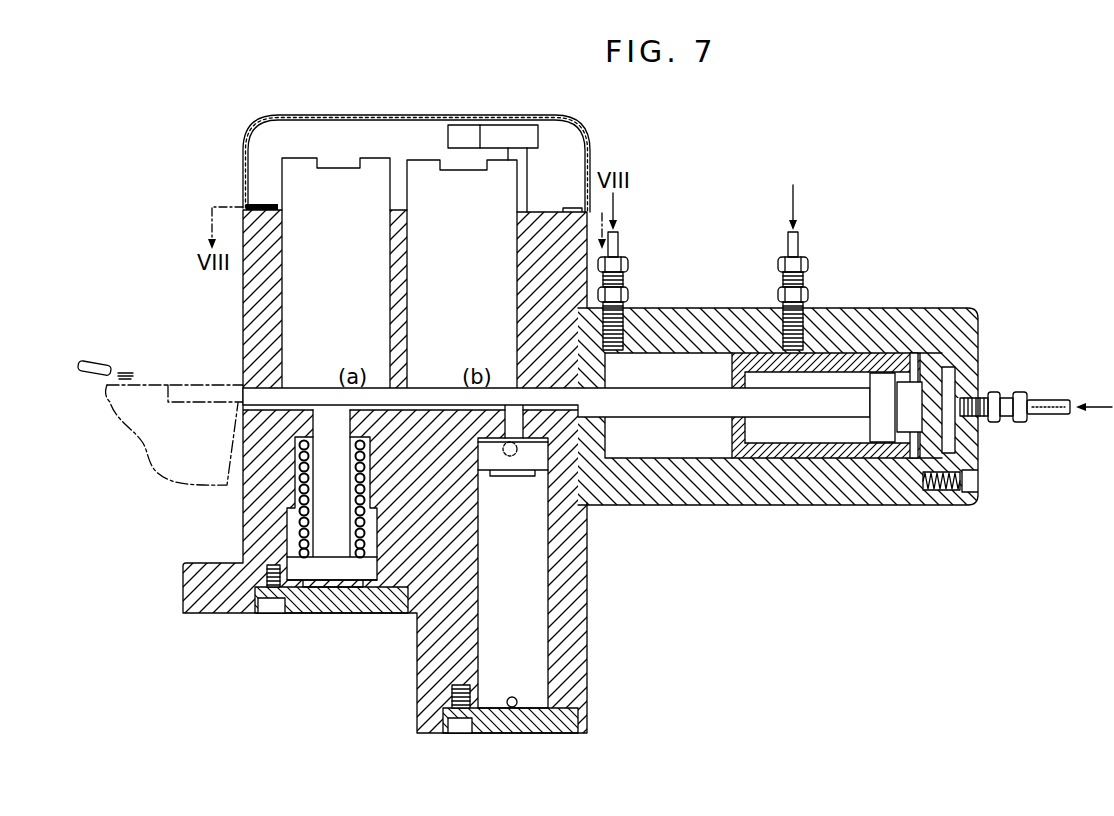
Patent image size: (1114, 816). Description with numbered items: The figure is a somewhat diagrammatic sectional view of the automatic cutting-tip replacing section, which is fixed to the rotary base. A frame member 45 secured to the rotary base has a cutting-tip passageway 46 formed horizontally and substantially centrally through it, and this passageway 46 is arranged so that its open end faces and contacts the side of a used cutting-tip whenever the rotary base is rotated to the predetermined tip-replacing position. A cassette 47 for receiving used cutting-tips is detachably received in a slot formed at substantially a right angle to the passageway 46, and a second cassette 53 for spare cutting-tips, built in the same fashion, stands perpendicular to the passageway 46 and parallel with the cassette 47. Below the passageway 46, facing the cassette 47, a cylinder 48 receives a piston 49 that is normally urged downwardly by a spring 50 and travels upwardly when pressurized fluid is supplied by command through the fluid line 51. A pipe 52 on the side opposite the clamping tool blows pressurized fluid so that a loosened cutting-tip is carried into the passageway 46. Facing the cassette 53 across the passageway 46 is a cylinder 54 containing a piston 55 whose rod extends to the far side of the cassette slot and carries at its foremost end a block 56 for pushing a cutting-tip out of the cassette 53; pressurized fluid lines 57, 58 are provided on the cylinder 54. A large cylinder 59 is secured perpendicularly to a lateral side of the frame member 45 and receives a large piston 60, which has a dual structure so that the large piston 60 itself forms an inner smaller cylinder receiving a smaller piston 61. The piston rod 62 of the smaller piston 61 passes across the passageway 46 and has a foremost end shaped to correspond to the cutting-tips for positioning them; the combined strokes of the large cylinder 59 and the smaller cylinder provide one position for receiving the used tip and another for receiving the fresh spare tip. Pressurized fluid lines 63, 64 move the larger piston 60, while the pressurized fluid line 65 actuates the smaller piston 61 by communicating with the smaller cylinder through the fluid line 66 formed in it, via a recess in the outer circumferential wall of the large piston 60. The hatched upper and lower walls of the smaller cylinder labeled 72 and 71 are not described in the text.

The frame member 45 is at (427, 663).
The cutting-tip passageway 46 is at (275, 398).
The cassette 47 is at (303, 172).
The cylinder 48 is at (355, 605).
The piston 49 is at (303, 598).
The spring 50 is at (293, 487).
The fluid line 51 is at (333, 580).
The pipe 52 is at (98, 363).
The cassette 53 is at (427, 170).
The cylinder 54 is at (547, 642).
The piston 55 is at (537, 470).
The block 56 is at (497, 135).
The pressurized fluid line 57 is at (486, 733).
The pressurized fluid line 58 is at (508, 458).
The large cylinder 59 is at (840, 325).
The large piston 60 is at (935, 360).
The smaller piston 61 is at (882, 380).
The piston rod 62 is at (835, 400).
The pressurized fluid line 63 is at (1050, 407).
The pressurized fluid line 64 is at (620, 243).
The pressurized fluid line 65 is at (797, 245).
The fluid line 66 is at (915, 455).
The cylinder bottom wall 71 is at (735, 440).
The cylinder top wall 72 is at (735, 372).